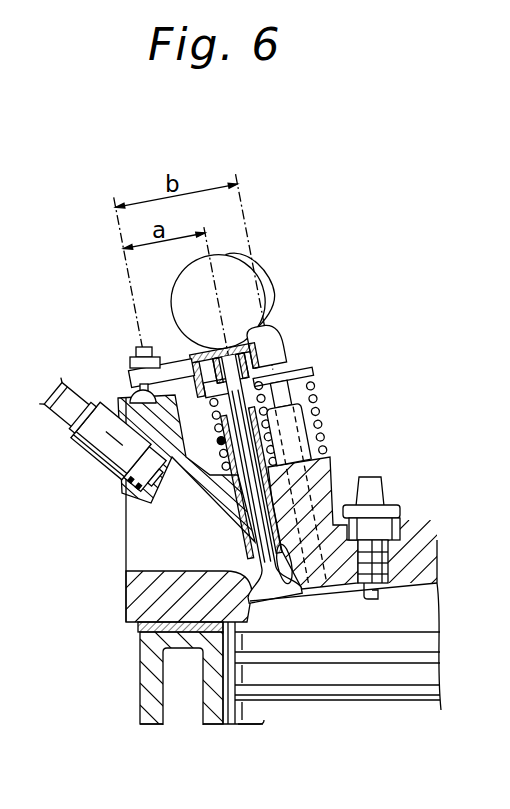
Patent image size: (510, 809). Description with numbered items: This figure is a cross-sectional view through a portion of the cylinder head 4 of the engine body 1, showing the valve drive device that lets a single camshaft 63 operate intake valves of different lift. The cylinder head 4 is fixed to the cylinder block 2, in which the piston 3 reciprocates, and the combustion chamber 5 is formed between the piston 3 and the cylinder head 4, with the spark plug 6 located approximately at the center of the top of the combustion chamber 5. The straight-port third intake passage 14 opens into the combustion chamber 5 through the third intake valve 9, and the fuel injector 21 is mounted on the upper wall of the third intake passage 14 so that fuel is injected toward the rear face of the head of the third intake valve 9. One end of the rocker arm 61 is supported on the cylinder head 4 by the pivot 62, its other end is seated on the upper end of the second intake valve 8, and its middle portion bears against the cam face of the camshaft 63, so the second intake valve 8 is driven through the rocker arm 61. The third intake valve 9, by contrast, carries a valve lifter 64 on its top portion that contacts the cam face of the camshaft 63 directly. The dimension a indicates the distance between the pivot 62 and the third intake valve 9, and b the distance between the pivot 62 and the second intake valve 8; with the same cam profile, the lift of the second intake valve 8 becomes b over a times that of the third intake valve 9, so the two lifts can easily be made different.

The engine body 1 is at (136, 692).
The cylinder block 2 is at (157, 722).
The piston 3 is at (312, 712).
The cylinder head 4 is at (405, 555).
The combustion chamber 5 is at (364, 618).
The spark plug 6 is at (378, 487).
The second intake valve 8 is at (285, 412).
The third intake valve 9 is at (275, 598).
The third intake passage 14 is at (186, 546).
The fuel injector 21 is at (97, 453).
The rocker arm 61 is at (171, 360).
The pivot 62 is at (143, 404).
The camshaft 63 is at (233, 267).
The valve lifter 64 is at (281, 345).